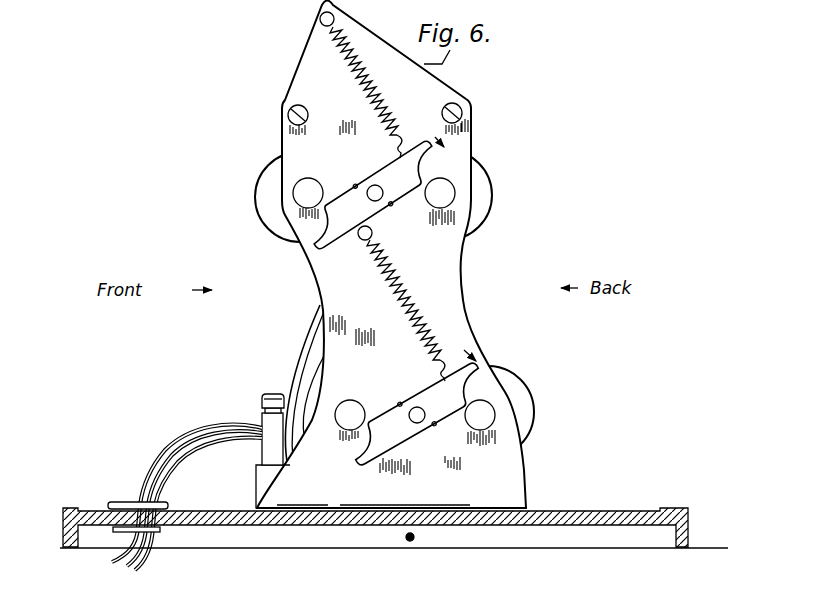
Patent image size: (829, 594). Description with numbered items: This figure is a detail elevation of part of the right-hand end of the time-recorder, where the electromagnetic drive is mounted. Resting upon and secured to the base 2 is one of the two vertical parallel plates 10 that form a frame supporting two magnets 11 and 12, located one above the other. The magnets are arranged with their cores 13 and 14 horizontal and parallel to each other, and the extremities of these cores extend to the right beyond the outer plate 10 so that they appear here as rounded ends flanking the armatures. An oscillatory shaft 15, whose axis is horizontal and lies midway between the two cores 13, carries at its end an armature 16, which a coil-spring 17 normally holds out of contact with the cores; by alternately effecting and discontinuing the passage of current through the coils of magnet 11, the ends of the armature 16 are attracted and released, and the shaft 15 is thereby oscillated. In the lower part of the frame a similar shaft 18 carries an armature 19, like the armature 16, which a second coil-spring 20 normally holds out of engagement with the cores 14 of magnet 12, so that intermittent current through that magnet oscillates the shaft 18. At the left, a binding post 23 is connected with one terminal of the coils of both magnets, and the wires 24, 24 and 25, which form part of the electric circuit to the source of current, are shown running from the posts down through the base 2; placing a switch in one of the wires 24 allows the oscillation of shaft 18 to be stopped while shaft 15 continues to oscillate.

The base 2 is at (690, 519).
The vertical parallel plate 10 is at (391, 255).
The magnet 11 is at (265, 178).
The magnet 12 is at (310, 397).
The core 13 is at (374, 193).
The core 14 is at (415, 415).
The oscillatory shaft 15 is at (367, 197).
The armature 16 is at (373, 194).
The coil-spring 17 is at (389, 102).
The shaft 18 is at (409, 418).
The armature 19 is at (417, 409).
The coil-spring 20 is at (417, 307).
The binding post 23 is at (262, 422).
The wire 24 is at (165, 448).
The wire 25 is at (189, 444).